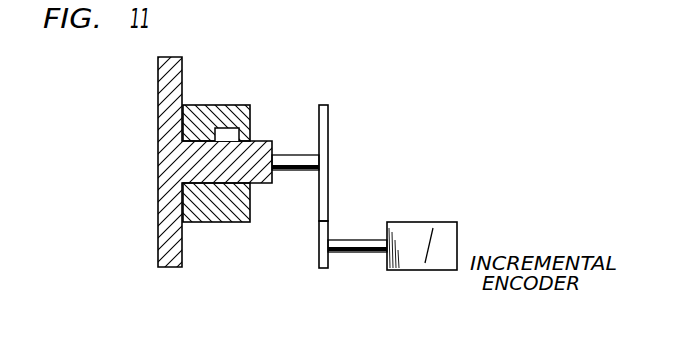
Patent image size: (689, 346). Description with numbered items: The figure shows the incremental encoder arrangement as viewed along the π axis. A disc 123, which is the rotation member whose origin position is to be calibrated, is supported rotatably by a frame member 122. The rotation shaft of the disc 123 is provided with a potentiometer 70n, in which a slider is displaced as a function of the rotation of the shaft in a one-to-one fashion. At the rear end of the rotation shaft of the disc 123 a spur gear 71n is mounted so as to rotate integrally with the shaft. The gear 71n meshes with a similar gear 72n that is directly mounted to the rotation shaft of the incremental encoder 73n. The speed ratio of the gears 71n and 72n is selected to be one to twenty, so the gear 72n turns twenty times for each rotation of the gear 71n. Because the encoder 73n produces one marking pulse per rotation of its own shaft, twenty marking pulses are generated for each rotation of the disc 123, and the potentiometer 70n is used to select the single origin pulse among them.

The frame member 122 is at (206, 104).
The disc 123 is at (164, 240).
The potentiometer 70n is at (234, 132).
The spur gear 71n is at (326, 130).
The gear 72n is at (323, 248).
The incremental encoder 73n is at (444, 228).